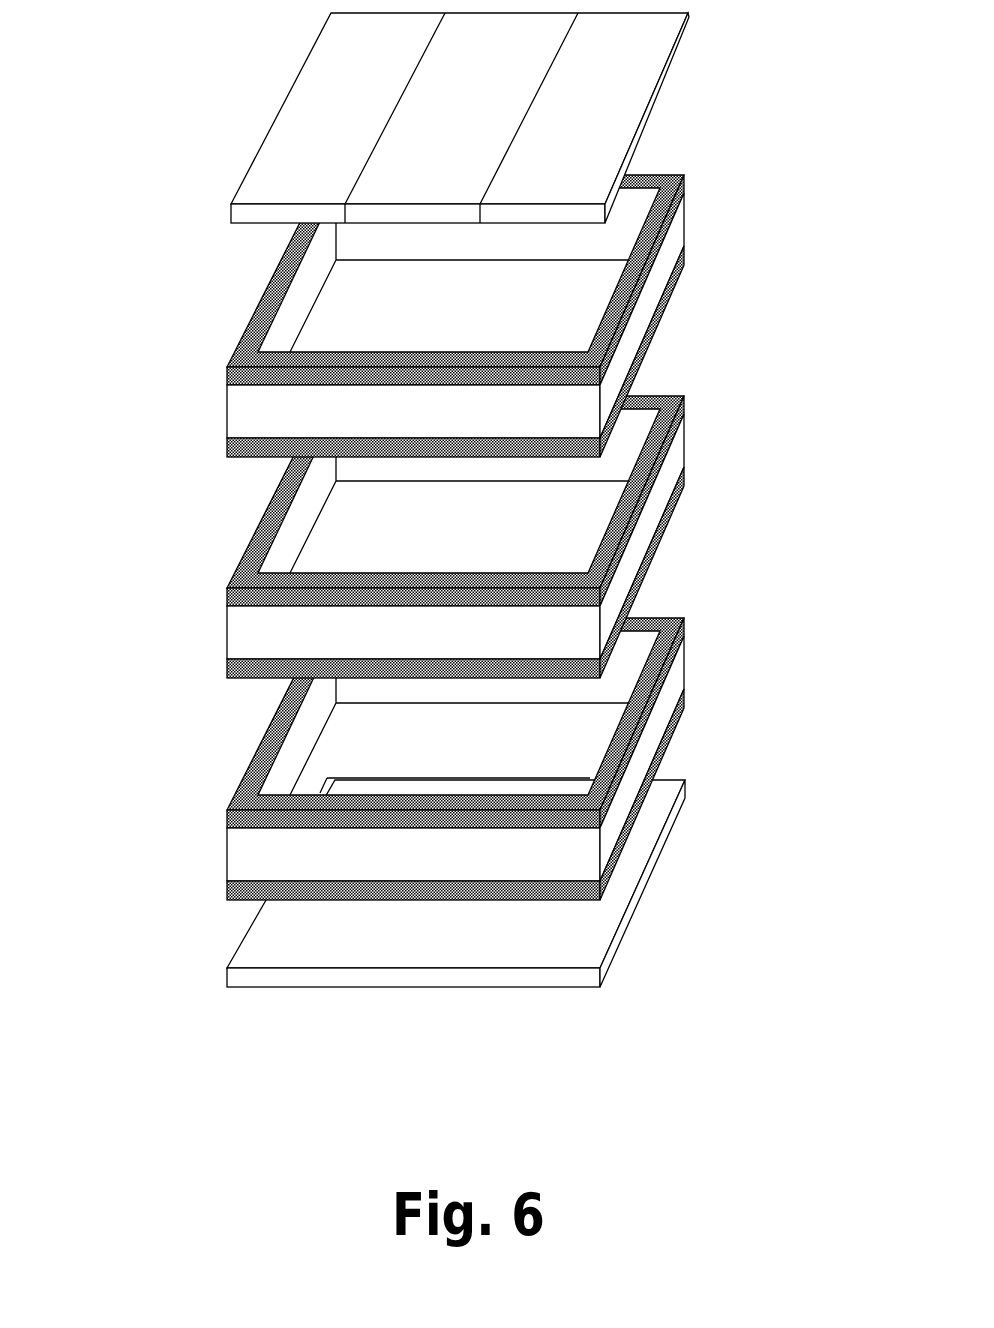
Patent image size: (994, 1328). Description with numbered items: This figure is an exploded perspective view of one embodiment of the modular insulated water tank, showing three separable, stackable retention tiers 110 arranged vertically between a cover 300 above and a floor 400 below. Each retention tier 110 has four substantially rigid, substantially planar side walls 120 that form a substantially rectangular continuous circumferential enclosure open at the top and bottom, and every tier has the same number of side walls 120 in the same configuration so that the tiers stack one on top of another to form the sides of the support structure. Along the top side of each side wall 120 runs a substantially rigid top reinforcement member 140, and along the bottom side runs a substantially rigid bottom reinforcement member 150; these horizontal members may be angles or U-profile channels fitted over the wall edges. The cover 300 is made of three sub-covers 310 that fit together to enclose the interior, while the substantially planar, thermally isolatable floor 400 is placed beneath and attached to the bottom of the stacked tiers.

The retention tier 110 is at (442, 534).
The side wall 120 is at (652, 285).
The top reinforcement member 140 is at (660, 173).
The bottom reinforcement member 150 is at (652, 342).
The cover 300 is at (426, 111).
The sub-cover 310 is at (610, 72).
The floor 400 is at (225, 968).